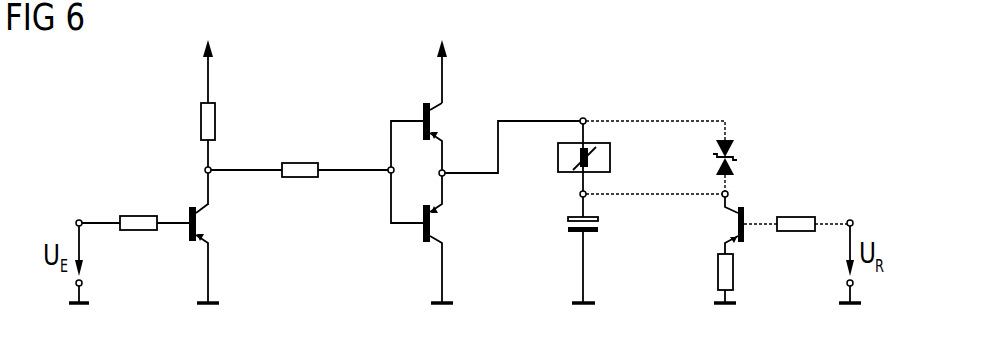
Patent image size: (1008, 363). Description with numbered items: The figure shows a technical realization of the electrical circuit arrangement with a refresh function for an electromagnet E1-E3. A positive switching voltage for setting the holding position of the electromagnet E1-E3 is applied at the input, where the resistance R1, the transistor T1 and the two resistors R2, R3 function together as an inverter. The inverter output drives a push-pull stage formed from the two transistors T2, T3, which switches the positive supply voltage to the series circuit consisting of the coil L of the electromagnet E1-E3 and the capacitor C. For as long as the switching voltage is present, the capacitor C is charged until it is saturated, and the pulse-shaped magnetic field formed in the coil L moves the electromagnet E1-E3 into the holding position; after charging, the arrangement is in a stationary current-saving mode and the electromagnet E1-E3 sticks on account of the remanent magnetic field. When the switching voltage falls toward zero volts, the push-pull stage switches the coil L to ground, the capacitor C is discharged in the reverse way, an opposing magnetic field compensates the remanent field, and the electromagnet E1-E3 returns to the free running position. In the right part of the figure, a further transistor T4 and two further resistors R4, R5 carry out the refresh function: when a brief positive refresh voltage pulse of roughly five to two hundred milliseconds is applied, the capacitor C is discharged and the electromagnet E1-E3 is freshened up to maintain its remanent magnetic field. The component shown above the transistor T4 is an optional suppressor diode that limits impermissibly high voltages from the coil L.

The resistance R1 is at (135, 216).
The resistor R2 is at (202, 122).
The resistor R3 is at (300, 163).
The further resistor R4 is at (796, 217).
The further resistor R5 is at (734, 268).
The transistor T1 is at (206, 226).
The transistor T2 is at (436, 123).
The transistor T3 is at (436, 225).
The further transistor T4 is at (734, 225).
The capacitor C is at (601, 225).
The coil L is at (575, 158).
The electromagnet E1-E3 is at (611, 158).